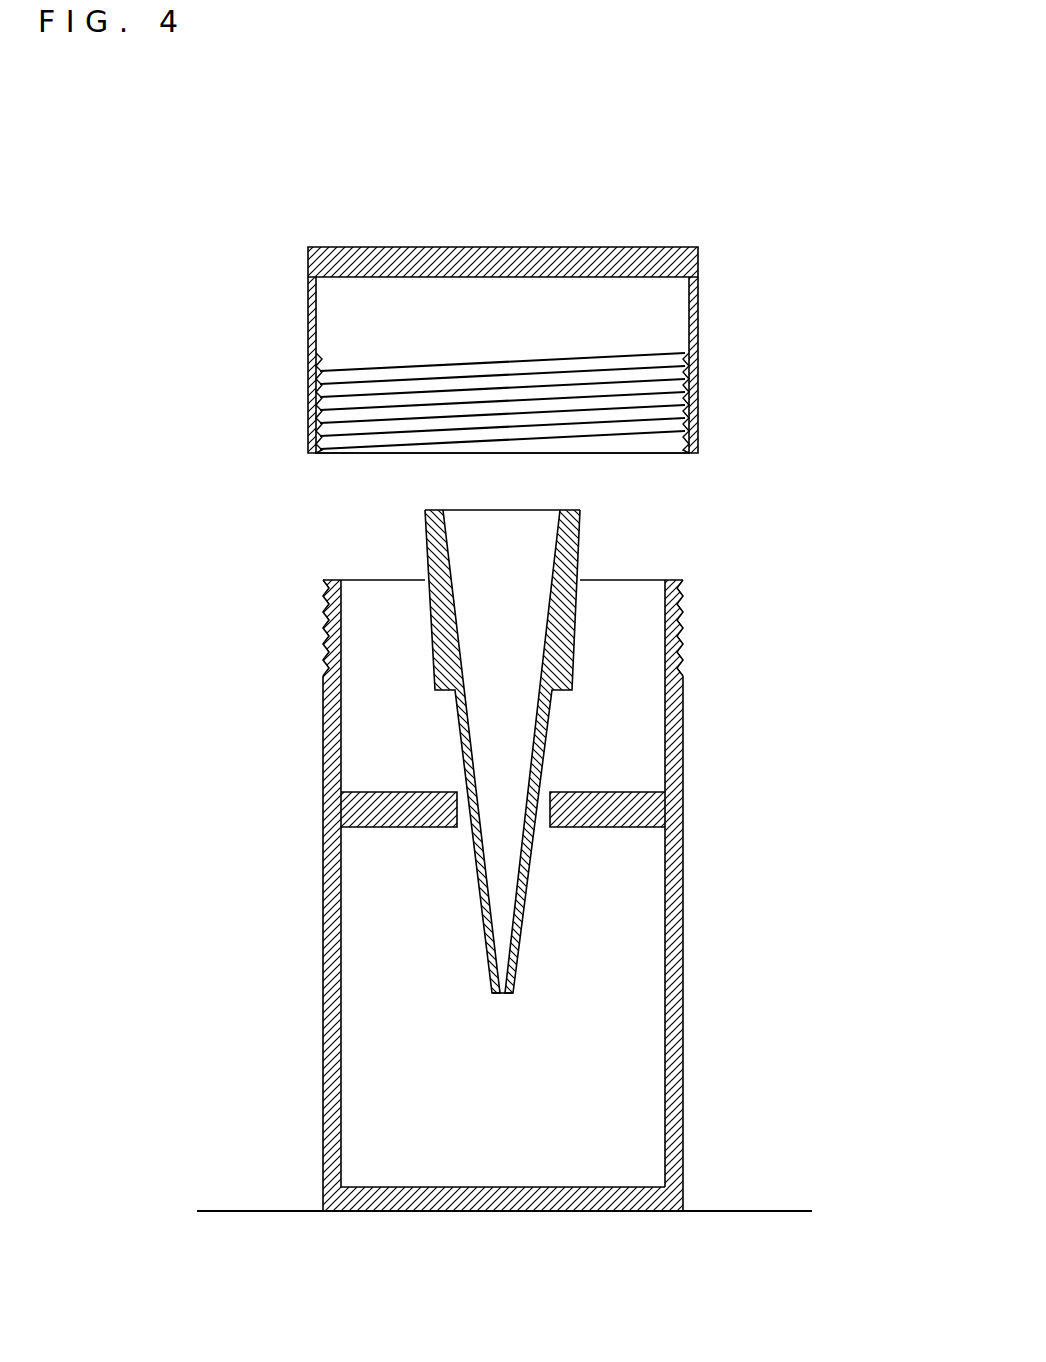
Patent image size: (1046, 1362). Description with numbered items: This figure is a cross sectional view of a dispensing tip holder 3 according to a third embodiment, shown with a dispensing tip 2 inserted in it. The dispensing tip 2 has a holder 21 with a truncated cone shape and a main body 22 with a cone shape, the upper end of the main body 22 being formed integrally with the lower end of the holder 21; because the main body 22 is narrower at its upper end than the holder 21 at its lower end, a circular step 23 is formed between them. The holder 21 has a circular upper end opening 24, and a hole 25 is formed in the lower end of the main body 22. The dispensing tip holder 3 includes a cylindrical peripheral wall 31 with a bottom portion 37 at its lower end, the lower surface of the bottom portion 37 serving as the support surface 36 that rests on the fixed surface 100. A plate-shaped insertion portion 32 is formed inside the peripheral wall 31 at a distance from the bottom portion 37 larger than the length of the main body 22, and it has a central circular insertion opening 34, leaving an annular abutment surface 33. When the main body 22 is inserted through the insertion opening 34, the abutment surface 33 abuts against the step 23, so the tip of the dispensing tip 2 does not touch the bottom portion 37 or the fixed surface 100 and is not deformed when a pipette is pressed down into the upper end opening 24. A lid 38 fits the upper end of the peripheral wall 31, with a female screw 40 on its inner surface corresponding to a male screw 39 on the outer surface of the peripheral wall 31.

The dispensing tip 2 is at (511, 781).
The dispensing tip holder 3 is at (596, 300).
The holder 21 is at (424, 567).
The main body 22 is at (457, 740).
The step 23 is at (558, 692).
The upper end opening 24 is at (507, 537).
The hole 25 is at (498, 993).
The peripheral wall 31 is at (553, 868).
The insertion portion 32 is at (640, 803).
The abutment surface 33 is at (610, 790).
The insertion opening 34 is at (462, 797).
The support surface 36 is at (450, 1213).
The bottom portion 37 is at (543, 1195).
The lid 38 is at (430, 265).
The male screw 39 is at (680, 617).
The female screw 40 is at (673, 377).
The fixed surface 100 is at (728, 1211).